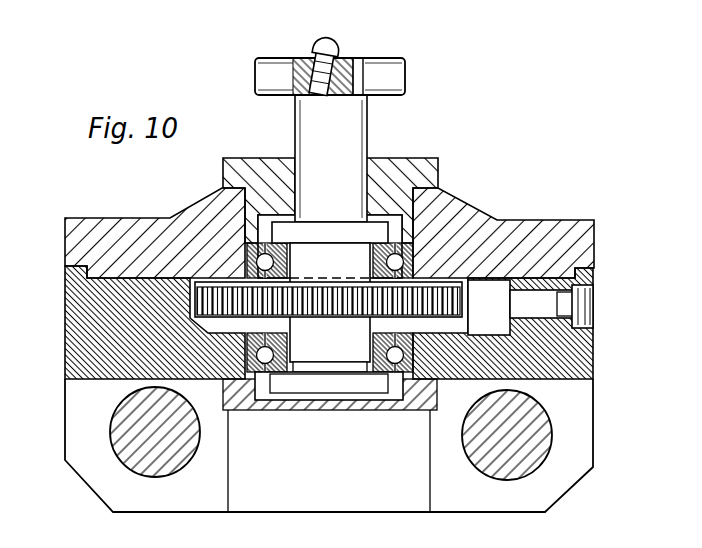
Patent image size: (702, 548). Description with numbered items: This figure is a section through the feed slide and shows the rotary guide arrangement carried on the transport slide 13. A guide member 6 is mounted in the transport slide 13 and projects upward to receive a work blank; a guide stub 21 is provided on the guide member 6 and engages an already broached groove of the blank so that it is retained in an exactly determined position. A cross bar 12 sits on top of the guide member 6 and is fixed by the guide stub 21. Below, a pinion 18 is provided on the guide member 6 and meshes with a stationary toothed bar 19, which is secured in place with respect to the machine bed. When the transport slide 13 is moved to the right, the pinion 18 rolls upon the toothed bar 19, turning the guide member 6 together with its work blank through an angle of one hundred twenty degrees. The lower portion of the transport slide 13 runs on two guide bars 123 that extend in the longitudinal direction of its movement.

The guide member 6 is at (402, 51).
The cross bar 12 is at (401, 77).
The transport slide 13 is at (583, 350).
The pinion 18 is at (453, 298).
The toothed bar 19 is at (492, 305).
The guide stub 21 is at (313, 52).
The guide bar 123 is at (133, 455).